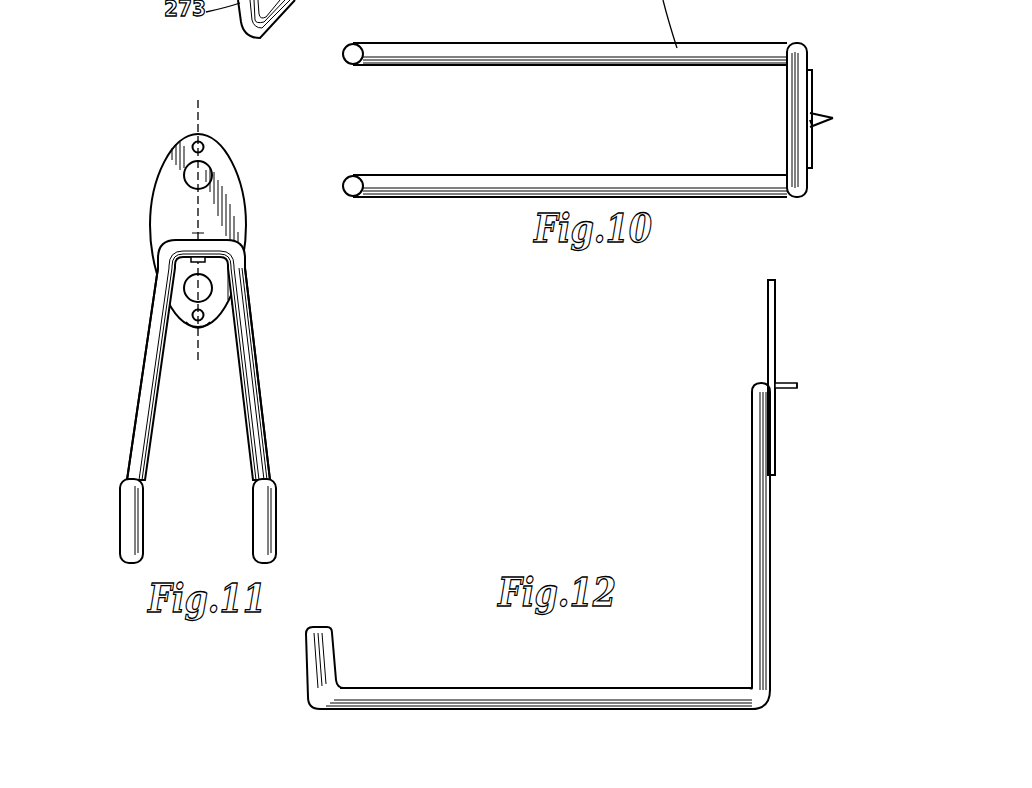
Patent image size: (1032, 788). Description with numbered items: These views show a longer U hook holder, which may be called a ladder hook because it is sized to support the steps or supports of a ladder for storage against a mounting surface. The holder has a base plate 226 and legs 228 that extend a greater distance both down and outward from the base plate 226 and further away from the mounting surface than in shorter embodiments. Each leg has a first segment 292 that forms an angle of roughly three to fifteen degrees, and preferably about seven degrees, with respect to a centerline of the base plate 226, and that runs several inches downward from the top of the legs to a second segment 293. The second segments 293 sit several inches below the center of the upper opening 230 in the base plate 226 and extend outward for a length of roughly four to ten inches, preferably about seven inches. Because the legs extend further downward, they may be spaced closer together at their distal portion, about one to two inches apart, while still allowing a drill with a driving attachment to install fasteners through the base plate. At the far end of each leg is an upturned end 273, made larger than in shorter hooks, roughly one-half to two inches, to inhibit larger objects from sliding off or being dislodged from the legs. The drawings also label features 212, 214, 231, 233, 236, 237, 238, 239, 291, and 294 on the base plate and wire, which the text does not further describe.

In FIG. 10, the plate end / securing portion 212 is at (812, 128).
In FIG. 12, the plate end / securing portion 212 is at (776, 392).
In FIG. 10, the tab 214 is at (832, 120).
In FIG. 12, the tab 214 is at (797, 386).
In FIG. 10, the base plate 226 is at (812, 82).
In FIG. 11, the base plate 226 is at (228, 178).
In FIG. 12, the base plate 226 is at (768, 318).
In FIG. 11, the legs 228 is at (137, 437).
In FIG. 11, the upper opening 230 is at (185, 178).
In FIG. 11, the small hole 231 is at (193, 147).
In FIG. 10, the tab edge 233 is at (832, 116).
In FIG. 12, the tab edge 233 is at (786, 383).
In FIG. 11, the plate centerline notch 236 is at (196, 236).
In FIG. 11, the retaining tab 237 is at (188, 259).
In FIG. 11, the plate top edge 238 is at (198, 134).
In FIG. 12, the plate top edge 238 is at (772, 281).
In FIG. 11, the plate bottom edge 239 is at (196, 328).
In FIG. 12, the plate bottom edge 239 is at (775, 476).
In FIG. 10, the upturned end 273 is at (353, 64).
In FIG. 11, the upturned end 273 is at (128, 532).
In FIG. 12, the upturned end 273 is at (310, 663).
In FIG. 11, the wire arch 291 is at (213, 240).
In FIG. 11, the first segment 292 is at (153, 302).
In FIG. 12, the first segment 292 is at (765, 556).
In FIG. 10, the second segment 293 is at (692, 176).
In FIG. 12, the second segment 293 is at (678, 693).
In FIG. 12, the wire corner bend 294 is at (766, 696).